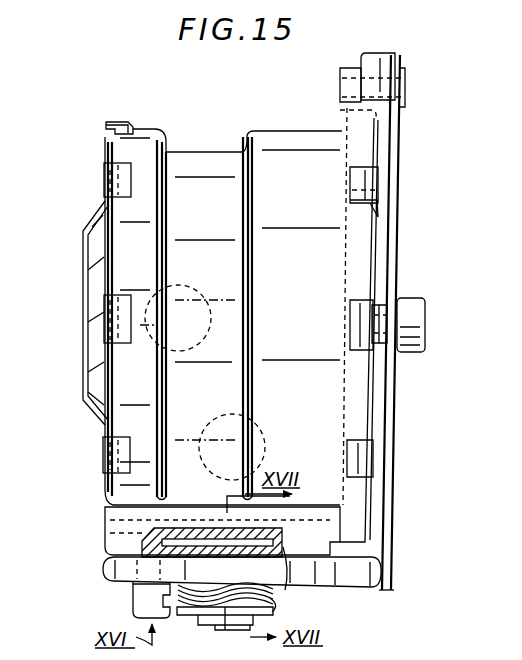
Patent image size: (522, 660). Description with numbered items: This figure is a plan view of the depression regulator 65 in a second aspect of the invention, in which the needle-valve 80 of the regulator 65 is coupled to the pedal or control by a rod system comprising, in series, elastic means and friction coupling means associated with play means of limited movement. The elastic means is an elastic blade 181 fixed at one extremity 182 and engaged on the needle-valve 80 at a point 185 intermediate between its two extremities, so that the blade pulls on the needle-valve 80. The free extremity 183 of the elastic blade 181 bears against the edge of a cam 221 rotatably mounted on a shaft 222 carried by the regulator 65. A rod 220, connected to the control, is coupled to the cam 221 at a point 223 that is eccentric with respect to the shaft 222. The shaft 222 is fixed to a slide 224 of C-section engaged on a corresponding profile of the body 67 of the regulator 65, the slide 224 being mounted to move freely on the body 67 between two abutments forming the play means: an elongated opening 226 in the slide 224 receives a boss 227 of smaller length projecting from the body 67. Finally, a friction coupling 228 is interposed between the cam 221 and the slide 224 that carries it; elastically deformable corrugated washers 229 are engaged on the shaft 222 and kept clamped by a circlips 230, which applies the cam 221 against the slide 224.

The depression regulator 65 is at (305, 128).
The body 67 is at (208, 170).
The needle-valve 80 is at (383, 299).
The elastic blade 181 is at (398, 417).
The extremity 182 is at (399, 56).
The free extremity 183 is at (394, 593).
The point 185 is at (392, 317).
The rod 220 is at (140, 608).
The cam 221 is at (103, 569).
The shaft 222 is at (209, 629).
The point 223 is at (133, 587).
The slide 224 is at (103, 536).
The elongated opening 226 is at (180, 533).
The boss 227 is at (282, 548).
The friction coupling 228 is at (275, 603).
The corrugated washers 229 is at (220, 538).
The circlips 230 is at (188, 607).